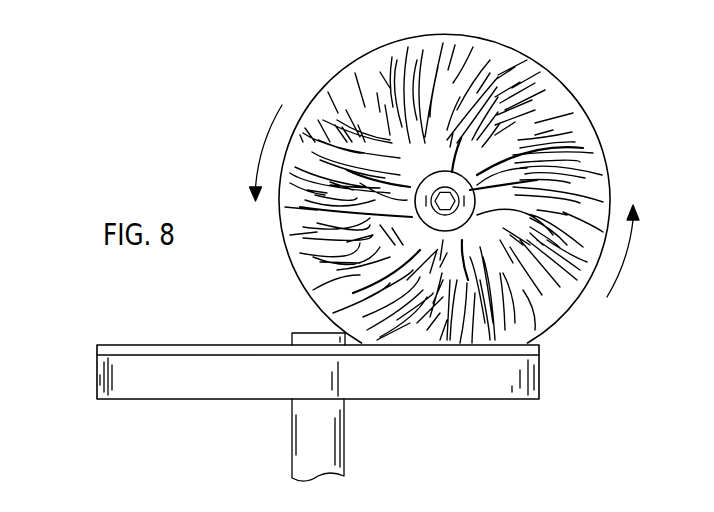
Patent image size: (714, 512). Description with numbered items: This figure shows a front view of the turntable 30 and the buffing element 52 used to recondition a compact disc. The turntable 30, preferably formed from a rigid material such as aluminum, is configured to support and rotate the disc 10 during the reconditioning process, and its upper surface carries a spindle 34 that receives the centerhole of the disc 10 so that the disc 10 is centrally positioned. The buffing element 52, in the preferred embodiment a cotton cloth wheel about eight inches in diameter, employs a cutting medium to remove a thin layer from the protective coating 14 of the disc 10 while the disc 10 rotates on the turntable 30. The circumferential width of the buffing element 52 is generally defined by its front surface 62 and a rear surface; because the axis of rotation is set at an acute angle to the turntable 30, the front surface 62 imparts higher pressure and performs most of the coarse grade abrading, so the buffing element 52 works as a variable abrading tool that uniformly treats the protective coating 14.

The disc 10 is at (278, 390).
The protective coating 14 is at (180, 343).
The turntable 30 is at (97, 386).
The spindle 34 is at (303, 332).
The buffing element 52 is at (528, 60).
The front surface 62 is at (598, 181).